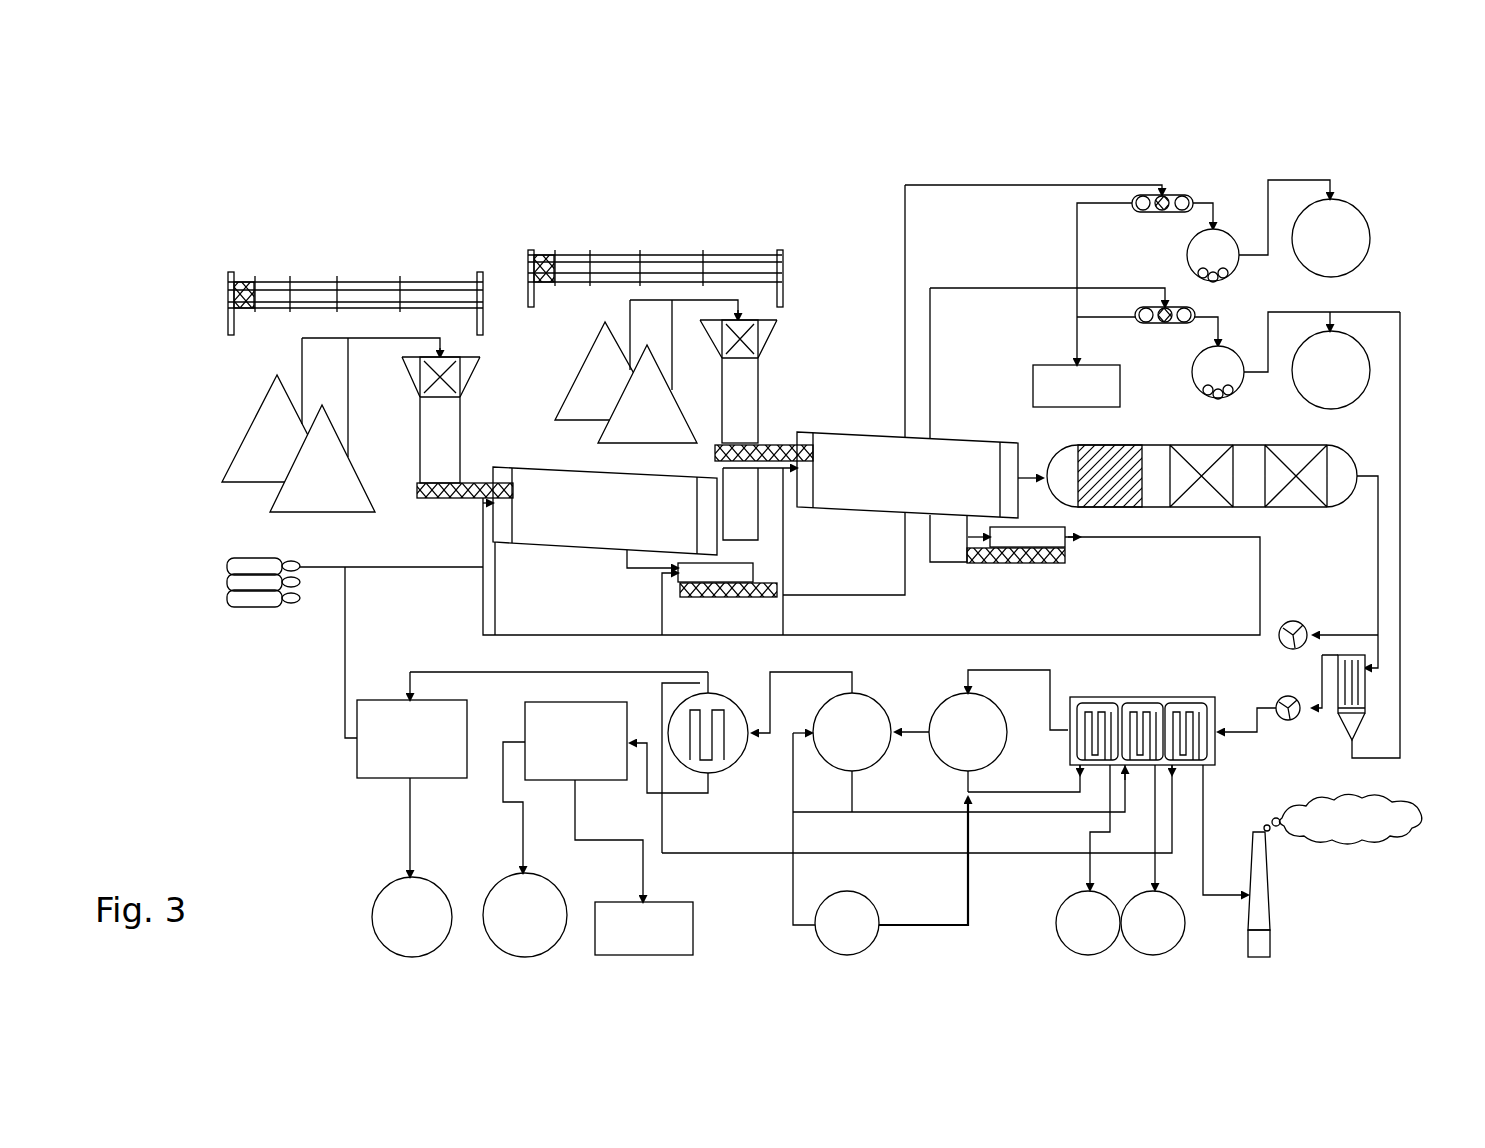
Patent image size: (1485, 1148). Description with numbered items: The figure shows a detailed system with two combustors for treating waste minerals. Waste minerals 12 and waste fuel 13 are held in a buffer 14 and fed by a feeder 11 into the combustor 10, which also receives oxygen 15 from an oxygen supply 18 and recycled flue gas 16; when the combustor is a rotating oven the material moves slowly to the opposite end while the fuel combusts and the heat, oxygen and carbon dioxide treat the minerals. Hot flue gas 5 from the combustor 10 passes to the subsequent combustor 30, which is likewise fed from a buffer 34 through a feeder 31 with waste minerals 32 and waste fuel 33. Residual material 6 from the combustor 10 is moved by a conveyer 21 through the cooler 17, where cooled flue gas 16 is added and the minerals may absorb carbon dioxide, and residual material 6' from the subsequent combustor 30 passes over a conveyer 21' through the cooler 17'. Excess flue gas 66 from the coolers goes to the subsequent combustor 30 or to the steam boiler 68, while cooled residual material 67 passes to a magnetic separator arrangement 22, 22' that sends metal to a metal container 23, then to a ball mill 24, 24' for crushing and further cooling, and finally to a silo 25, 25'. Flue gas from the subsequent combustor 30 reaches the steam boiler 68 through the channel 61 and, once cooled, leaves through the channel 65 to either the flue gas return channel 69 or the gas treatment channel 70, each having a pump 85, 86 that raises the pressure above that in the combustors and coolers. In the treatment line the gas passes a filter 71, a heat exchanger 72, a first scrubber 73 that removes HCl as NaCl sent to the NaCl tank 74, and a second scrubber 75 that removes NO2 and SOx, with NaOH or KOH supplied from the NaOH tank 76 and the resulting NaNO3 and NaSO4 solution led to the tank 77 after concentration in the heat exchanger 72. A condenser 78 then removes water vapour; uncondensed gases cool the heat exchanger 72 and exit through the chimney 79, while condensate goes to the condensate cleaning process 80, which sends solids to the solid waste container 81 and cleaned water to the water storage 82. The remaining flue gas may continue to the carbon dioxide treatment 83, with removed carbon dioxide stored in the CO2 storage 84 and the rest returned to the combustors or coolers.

The hot flue gas 5 is at (726, 468).
The residual material 6 is at (628, 575).
The residual material 6' is at (961, 542).
The combustor 10 is at (568, 505).
The feeder 11 is at (445, 500).
The waste minerals 12 is at (258, 438).
The waste fuel 13 is at (305, 493).
The buffer 14 is at (440, 447).
The oxygen 15 is at (330, 570).
The flue gas 16 is at (481, 600).
The cooler 17 is at (720, 598).
The cooler 17' is at (1059, 558).
The oxygen supply 18 is at (255, 608).
The conveyer 21 is at (728, 608).
The conveyer 21' is at (1016, 580).
The magnetic separator arrangement 22 is at (1059, 249).
The magnetic separator arrangement 22' is at (1074, 339).
The metal container 23 is at (1063, 386).
The ball mill 24 is at (1258, 217).
The ball mill 24' is at (1292, 376).
The silo 25 is at (1367, 238).
The silo 25' is at (1369, 370).
The subsequent combustor 30 is at (862, 465).
The feeder 31 is at (768, 443).
The waste minerals 32 is at (600, 378).
The waste fuel 33 is at (648, 410).
The buffer 34 is at (748, 373).
The channel 61 is at (1022, 476).
The channel 65 is at (1380, 545).
The excess flue gas 66 is at (1082, 523).
The cooled residual material 67 is at (935, 562).
The steam boiler 68 is at (1340, 465).
The flue gas return channel 69 is at (1352, 632).
The gas treatment channel 70 is at (1380, 652).
The filter 71 is at (1355, 695).
The heat exchanger 72 is at (1150, 720).
The first scrubber 73 is at (955, 715).
The NaCl tank 74 is at (1088, 933).
The second scrubber 75 is at (872, 710).
The NaOH tank 76 is at (865, 930).
The tank 77 is at (1163, 925).
The condenser 78 is at (725, 735).
The chimney 79 is at (1262, 900).
The condensate cleaning process 80 is at (550, 718).
The solid waste container 81 is at (672, 925).
The water storage 82 is at (520, 920).
The carbon dioxide treatment 83 is at (393, 748).
The CO2 storage 84 is at (400, 920).
The pump 85 is at (1288, 646).
The pump 86 is at (1295, 700).